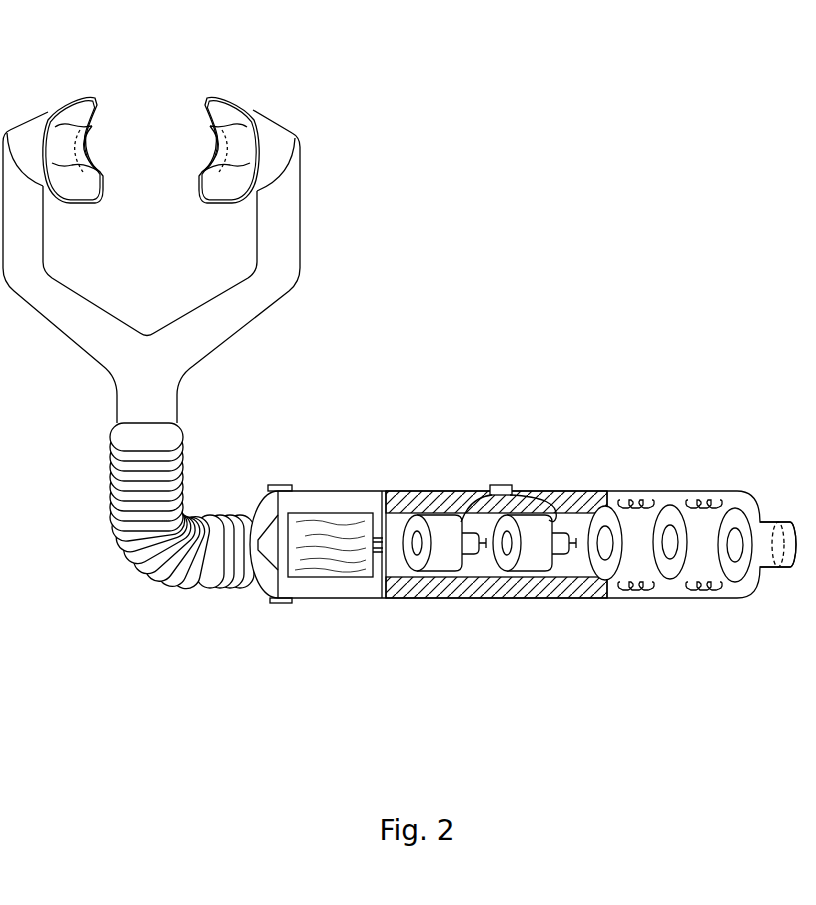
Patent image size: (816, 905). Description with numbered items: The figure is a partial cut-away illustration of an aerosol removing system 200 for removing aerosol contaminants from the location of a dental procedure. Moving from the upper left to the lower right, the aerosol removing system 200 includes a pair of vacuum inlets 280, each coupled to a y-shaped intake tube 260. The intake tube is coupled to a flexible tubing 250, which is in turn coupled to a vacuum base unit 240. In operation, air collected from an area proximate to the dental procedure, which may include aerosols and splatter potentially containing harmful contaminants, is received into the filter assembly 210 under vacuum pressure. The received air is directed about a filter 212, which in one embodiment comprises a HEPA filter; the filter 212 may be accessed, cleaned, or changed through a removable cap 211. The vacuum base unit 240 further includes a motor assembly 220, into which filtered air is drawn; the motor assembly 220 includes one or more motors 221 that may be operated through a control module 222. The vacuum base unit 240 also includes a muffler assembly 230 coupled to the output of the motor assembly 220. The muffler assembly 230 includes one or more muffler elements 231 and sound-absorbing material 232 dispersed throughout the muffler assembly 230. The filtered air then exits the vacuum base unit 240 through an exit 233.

The aerosol removing system 200 is at (523, 152).
The filter assembly 210 is at (265, 530).
The removable cap 211 is at (270, 600).
The filter 212 is at (339, 553).
The motor assembly 220 is at (482, 530).
The motors 221 is at (535, 558).
The control module 222 is at (498, 498).
The muffler assembly 230 is at (657, 530).
The muffler elements 231 is at (723, 546).
The sound-absorbing material 232 is at (697, 586).
The exit 233 is at (788, 550).
The vacuum base unit 240 is at (502, 365).
The flexible tubing 250 is at (118, 565).
The y-shaped intake tube 260 is at (207, 325).
The vacuum inlets 280 is at (210, 98).